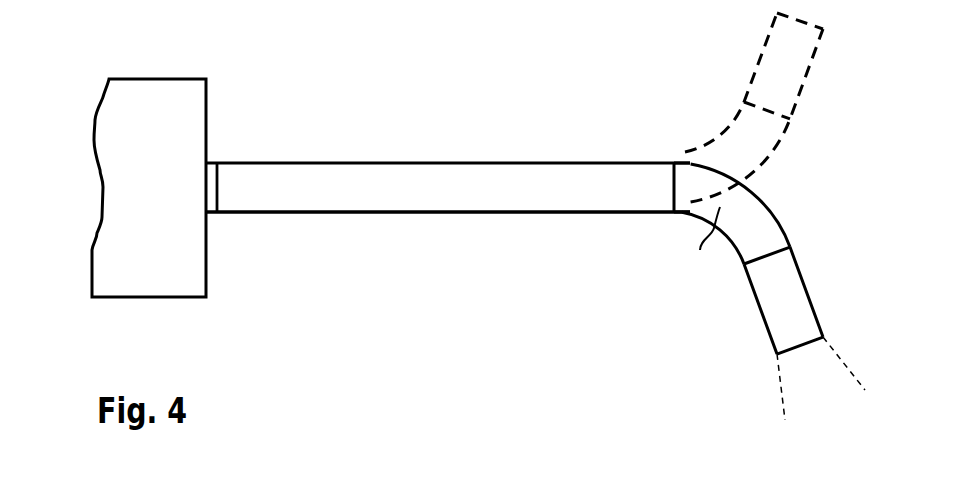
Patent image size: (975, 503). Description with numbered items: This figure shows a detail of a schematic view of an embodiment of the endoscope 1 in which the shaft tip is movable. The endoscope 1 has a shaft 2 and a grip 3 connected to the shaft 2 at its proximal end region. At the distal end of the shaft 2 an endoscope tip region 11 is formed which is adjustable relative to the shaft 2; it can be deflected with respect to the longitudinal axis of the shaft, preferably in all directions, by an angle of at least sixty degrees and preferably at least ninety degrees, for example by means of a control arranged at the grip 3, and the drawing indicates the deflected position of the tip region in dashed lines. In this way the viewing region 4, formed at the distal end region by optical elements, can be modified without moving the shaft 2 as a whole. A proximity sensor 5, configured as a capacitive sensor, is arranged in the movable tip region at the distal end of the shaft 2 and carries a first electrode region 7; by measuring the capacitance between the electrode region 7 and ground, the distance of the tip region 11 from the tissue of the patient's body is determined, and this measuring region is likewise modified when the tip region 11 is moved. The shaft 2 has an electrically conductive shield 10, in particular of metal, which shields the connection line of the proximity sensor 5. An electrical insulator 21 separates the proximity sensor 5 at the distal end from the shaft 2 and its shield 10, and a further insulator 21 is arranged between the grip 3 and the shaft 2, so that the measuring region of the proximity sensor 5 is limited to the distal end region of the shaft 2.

The endoscope 1 is at (810, 174).
The shaft 2 is at (460, 208).
The grip 3 is at (133, 193).
The viewing region 4 is at (821, 378).
The proximity sensor 5 is at (758, 308).
The first electrode region 7 is at (788, 307).
The shield 10 is at (338, 193).
The endoscope tip region 11 is at (692, 185).
The insulator 21 is at (211, 201).